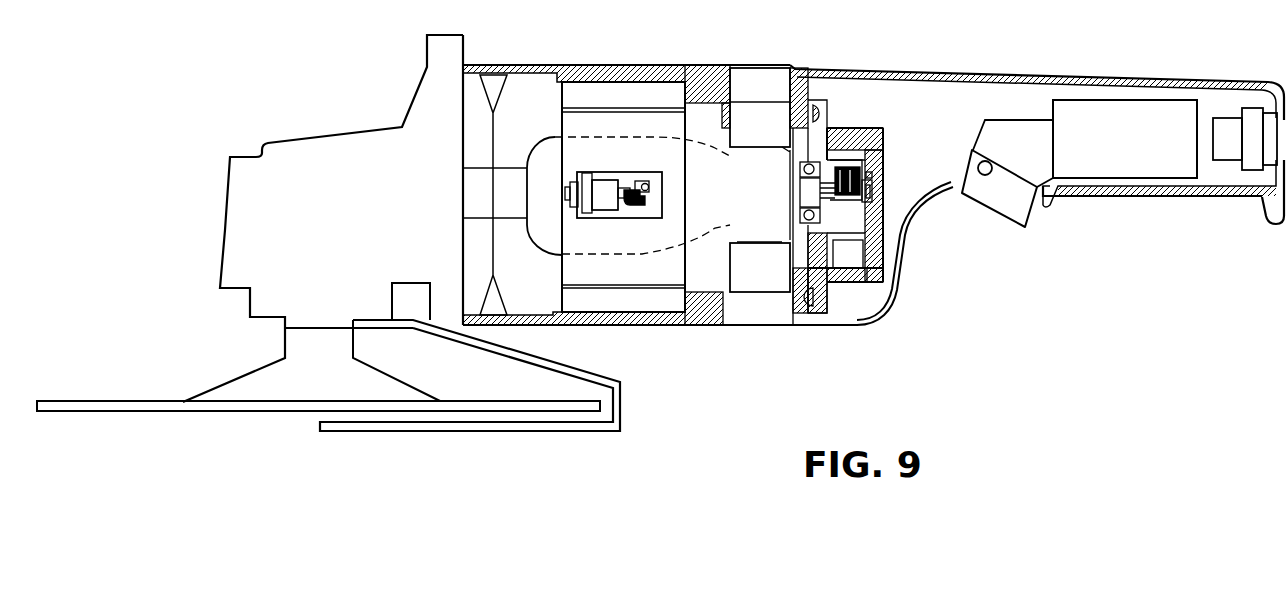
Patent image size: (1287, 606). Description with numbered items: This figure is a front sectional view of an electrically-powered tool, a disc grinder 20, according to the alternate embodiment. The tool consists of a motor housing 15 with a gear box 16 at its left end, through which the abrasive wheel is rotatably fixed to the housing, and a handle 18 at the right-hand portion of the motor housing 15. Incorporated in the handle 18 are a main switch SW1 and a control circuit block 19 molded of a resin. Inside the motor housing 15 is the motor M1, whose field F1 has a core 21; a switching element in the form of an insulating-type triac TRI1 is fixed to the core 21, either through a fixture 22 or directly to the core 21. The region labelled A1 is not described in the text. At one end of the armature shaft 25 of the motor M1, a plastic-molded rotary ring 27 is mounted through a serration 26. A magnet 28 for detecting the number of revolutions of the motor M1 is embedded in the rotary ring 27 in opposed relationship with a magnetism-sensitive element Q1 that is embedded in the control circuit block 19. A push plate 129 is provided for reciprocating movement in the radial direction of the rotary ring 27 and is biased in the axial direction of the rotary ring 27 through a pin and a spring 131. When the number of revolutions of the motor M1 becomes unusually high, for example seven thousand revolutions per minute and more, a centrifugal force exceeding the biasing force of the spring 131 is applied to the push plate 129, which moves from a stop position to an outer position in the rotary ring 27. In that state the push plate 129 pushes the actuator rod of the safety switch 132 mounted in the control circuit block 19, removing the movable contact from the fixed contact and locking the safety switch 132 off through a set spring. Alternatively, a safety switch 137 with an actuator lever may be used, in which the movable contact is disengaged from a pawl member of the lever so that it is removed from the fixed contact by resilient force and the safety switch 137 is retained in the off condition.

The motor housing 15 is at (712, 313).
The gear box 16 is at (291, 148).
The handle 18 is at (1000, 72).
The control circuit block 19 is at (885, 142).
The disc grinder 20 is at (745, 60).
The core 21 is at (647, 113).
The fixture 22 is at (655, 215).
The armature shaft 25 is at (790, 190).
The serration 26 is at (832, 140).
The rotary ring 27 is at (866, 174).
The magnet 28 is at (862, 262).
The push plate 129 is at (843, 220).
The spring 131 is at (853, 183).
The safety switch 132 is at (868, 321).
The safety switch 137 is at (904, 251).
The motor M1 is at (582, 113).
The field F1 is at (607, 278).
The armature air gap A1 is at (703, 160).
The triac TRI1 is at (610, 190).
The magnetism-sensitive element Q1 is at (887, 200).
The main switch SW1 is at (1110, 108).